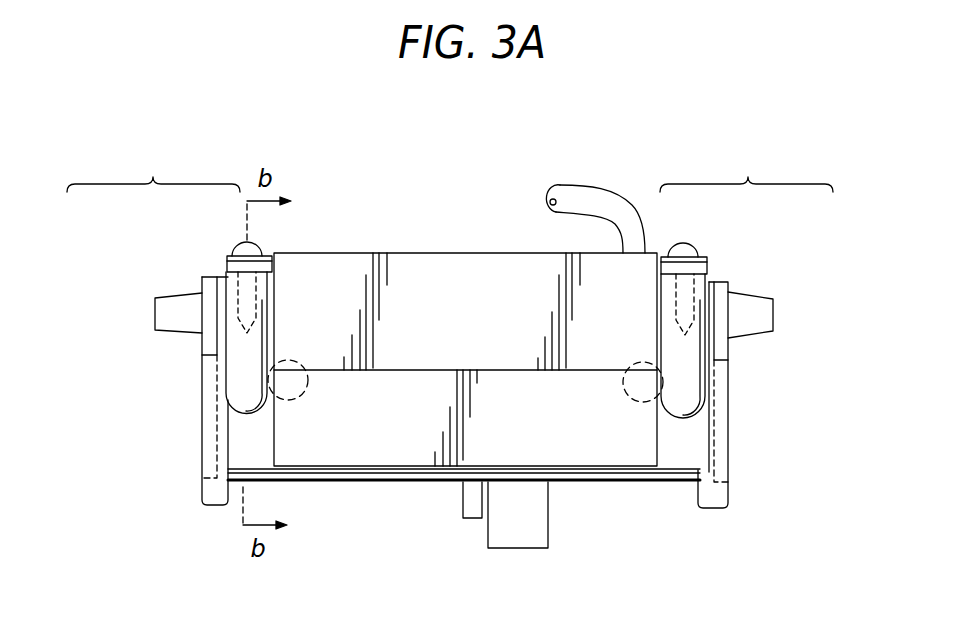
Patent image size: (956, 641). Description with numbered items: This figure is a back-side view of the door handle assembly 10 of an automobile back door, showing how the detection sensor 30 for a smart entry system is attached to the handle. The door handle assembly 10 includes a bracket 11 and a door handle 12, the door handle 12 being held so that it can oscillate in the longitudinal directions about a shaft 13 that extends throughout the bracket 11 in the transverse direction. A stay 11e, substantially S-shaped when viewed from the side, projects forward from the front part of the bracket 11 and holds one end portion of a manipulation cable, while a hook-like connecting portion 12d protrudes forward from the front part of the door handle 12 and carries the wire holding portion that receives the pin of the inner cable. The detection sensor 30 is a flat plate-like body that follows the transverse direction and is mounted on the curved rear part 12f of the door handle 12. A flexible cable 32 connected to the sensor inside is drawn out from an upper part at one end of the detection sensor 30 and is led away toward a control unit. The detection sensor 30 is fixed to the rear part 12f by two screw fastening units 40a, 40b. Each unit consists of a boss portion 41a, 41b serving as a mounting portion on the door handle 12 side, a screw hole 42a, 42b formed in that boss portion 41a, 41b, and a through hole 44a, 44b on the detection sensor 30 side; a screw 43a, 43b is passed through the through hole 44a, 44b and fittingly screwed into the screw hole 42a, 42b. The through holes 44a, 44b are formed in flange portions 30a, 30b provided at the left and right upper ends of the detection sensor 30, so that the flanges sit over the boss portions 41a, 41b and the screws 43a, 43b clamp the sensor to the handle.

The door handle assembly 10 is at (357, 218).
The bracket 11 is at (730, 347).
The stay 11e is at (470, 517).
The door handle 12 is at (730, 415).
The connecting portion 12d is at (520, 540).
The rear part 12f is at (682, 437).
The shaft 13 is at (773, 316).
The detection sensor 30 is at (562, 428).
The flange portion 30a is at (272, 255).
The flange portion 30b is at (668, 256).
The cable 32 is at (592, 199).
The screw fastening unit 40a is at (153, 171).
The screw fastening unit 40b is at (746, 170).
The boss portion 41a is at (238, 376).
The screw hole 42a is at (200, 293).
The screw 43a is at (233, 254).
The through hole 44a is at (225, 266).
The boss portion 41b is at (730, 333).
The screw hole 42b is at (733, 287).
The screw 43b is at (697, 252).
The through hole 44b is at (718, 293).